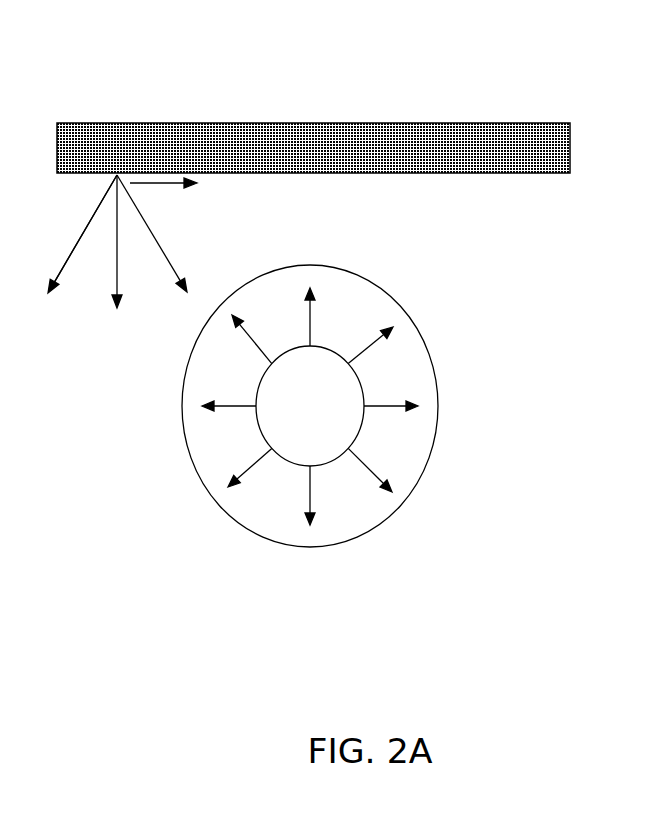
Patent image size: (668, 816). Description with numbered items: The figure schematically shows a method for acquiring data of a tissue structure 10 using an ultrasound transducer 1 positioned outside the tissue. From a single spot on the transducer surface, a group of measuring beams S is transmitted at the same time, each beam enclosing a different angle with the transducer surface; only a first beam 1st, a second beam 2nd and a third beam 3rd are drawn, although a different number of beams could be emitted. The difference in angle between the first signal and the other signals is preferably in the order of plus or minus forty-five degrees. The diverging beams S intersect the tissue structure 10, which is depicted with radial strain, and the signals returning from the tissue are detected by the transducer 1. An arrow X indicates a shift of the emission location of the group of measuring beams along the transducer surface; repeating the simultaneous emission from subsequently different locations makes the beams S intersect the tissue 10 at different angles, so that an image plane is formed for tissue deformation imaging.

The transducer 1 is at (450, 128).
The tissue structure 10 is at (410, 457).
The measuring beam S is at (82, 234).
The arrow X is at (135, 184).
The first beam 1st is at (132, 243).
The second beam 2nd is at (165, 233).
The third beam 3rd is at (82, 244).